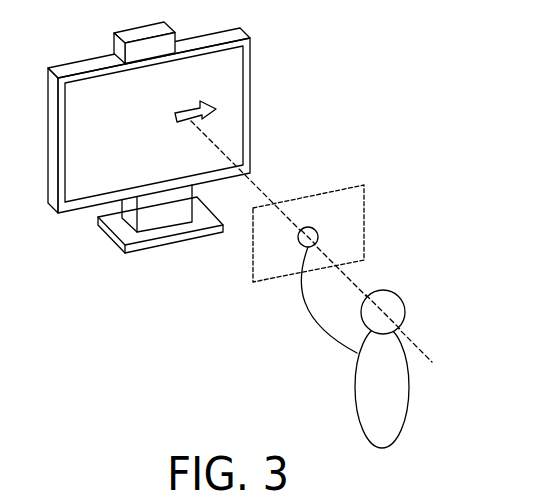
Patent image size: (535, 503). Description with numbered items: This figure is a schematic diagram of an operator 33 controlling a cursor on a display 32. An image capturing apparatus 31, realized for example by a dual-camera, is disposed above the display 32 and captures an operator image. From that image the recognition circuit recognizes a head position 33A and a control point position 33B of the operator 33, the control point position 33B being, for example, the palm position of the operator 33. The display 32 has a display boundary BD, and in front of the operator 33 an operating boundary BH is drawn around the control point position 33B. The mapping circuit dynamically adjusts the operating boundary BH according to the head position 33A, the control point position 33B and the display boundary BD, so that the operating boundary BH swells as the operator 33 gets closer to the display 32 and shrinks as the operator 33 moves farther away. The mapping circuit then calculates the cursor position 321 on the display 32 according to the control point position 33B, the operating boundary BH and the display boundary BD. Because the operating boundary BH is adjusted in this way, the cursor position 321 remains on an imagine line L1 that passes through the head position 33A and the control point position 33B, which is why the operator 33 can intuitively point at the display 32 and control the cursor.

The image capturing apparatus 31 is at (128, 35).
The display 32 is at (248, 29).
The cursor position 321 is at (208, 103).
The display boundary BD is at (252, 122).
The operator 33 is at (368, 385).
The head position 33A is at (390, 300).
The control point position 33B is at (308, 226).
The operating boundary BH is at (294, 260).
The imagine line L1 is at (331, 241).